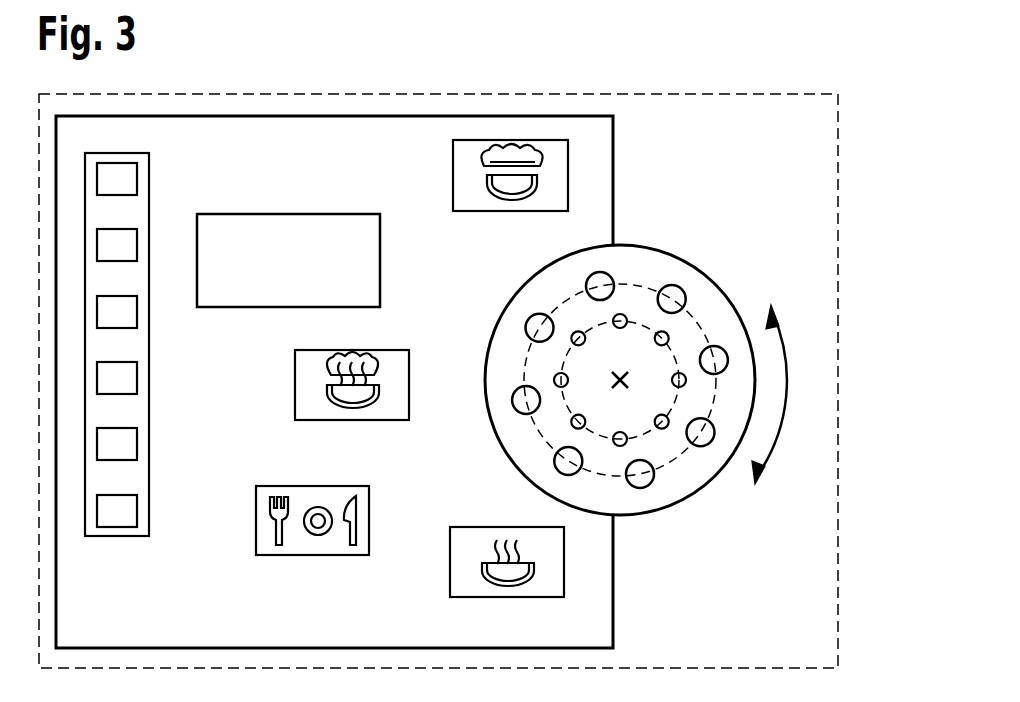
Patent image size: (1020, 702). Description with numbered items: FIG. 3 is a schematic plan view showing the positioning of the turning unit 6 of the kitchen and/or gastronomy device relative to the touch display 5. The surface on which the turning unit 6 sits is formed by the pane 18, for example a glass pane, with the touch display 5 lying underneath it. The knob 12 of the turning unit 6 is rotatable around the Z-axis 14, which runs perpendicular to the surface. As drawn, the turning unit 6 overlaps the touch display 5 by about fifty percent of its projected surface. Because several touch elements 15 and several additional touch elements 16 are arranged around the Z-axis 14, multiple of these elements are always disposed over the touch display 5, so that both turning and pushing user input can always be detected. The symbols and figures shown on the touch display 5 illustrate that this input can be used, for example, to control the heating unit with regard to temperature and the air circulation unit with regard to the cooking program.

The touch display 5 is at (376, 116).
The turning unit 6 is at (645, 311).
The knob 12 is at (718, 480).
The Z-axis 14 is at (628, 385).
The touch elements 15 is at (606, 279).
The additional touch elements 16 is at (622, 314).
The pane 18 is at (818, 93).